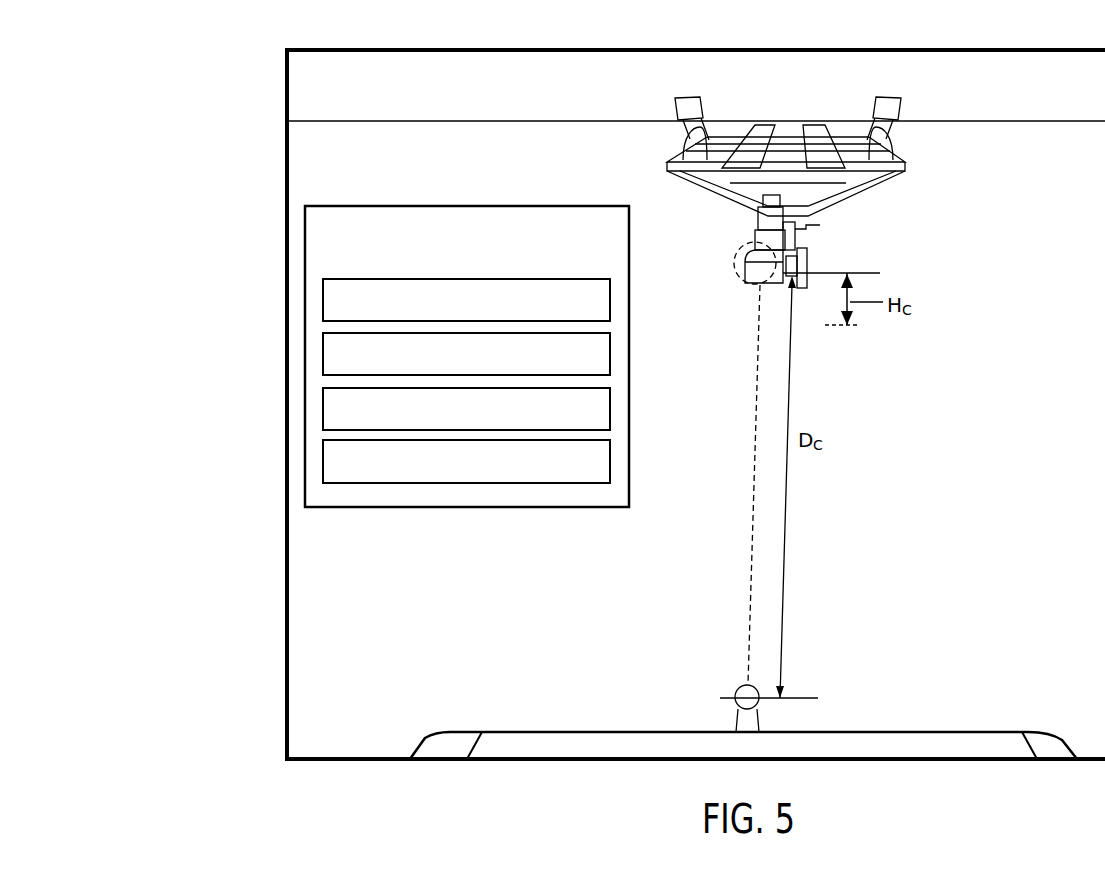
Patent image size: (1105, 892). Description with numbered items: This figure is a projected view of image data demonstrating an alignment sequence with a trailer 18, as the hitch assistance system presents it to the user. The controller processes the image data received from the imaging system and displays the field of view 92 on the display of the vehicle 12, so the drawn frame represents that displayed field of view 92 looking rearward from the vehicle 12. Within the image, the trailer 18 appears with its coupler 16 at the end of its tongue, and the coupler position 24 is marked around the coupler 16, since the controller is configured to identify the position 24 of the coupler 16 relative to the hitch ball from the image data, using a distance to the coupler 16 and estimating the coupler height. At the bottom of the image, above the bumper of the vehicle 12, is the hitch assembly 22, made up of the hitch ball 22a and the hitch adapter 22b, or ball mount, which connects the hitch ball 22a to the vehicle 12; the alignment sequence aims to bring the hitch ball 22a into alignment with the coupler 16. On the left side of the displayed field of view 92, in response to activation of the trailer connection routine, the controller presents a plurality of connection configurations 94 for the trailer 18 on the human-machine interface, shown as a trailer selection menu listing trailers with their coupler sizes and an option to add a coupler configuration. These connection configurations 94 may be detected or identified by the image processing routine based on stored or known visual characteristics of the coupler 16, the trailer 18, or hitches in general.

The vehicle 12 is at (450, 732).
The coupler 16 is at (757, 270).
The trailer 18 is at (667, 161).
The hitch assembly 22 is at (703, 667).
The hitch ball 22a is at (740, 689).
The hitch adapter 22b is at (737, 725).
The coupler position 24 is at (736, 258).
The field of view 92 is at (287, 80).
The connection configuration 94 is at (323, 410).